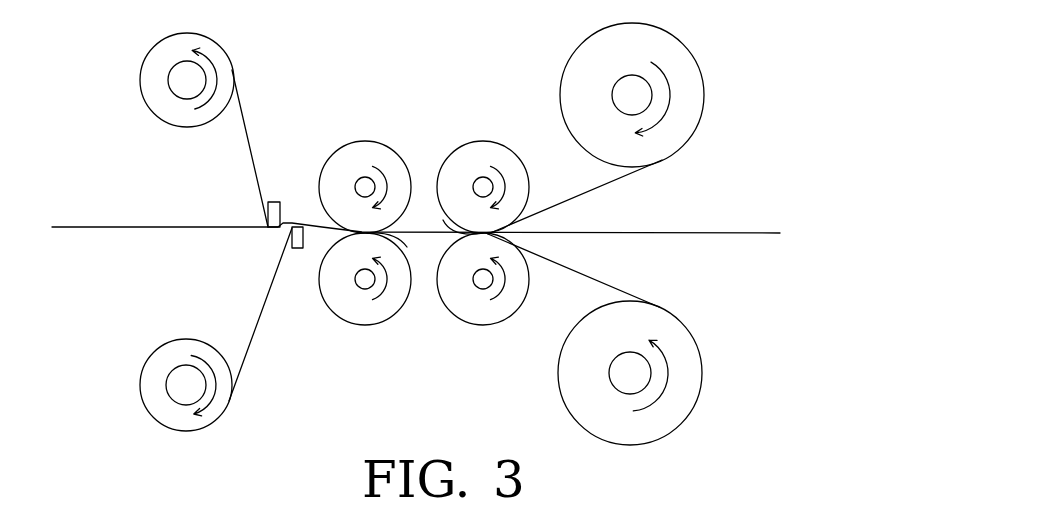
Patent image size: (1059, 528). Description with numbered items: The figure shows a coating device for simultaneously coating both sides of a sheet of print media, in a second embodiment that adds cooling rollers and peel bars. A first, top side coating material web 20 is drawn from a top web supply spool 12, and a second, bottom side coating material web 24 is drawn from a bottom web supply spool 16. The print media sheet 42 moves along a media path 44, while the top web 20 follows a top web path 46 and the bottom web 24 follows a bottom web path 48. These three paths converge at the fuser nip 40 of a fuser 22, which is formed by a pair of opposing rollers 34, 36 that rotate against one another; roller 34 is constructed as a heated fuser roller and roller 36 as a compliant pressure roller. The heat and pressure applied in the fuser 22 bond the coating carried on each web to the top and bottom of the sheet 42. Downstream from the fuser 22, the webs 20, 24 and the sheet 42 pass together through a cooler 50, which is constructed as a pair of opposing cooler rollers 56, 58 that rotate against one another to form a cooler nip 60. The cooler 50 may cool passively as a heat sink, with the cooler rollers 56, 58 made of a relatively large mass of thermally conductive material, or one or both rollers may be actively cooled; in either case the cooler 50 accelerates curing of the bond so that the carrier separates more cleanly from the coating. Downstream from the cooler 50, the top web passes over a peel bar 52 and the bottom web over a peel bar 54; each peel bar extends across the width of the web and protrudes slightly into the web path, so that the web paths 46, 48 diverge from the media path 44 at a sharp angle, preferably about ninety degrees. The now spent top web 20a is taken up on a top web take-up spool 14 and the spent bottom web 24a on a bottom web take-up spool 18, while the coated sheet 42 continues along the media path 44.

The top web supply spool 12 is at (703, 93).
The top web take-up spool 14 is at (142, 75).
The bottom web supply spool 16 is at (702, 370).
The bottom web take-up spool 18 is at (142, 387).
The top side coating material web 20 is at (600, 186).
The spent top web 20a is at (246, 125).
The fuser 22 is at (457, 140).
The bottom side coating material web 24 is at (600, 282).
The spent bottom web 24a is at (254, 335).
The heated fuser roller 34 is at (483, 150).
The compliant pressure roller 36 is at (483, 315).
The fuser nip 40 is at (455, 215).
The print media sheet 42 is at (742, 235).
The media path 44 is at (160, 205).
The top web path 46 is at (233, 132).
The bottom web path 48 is at (578, 206).
The cooler 50 is at (400, 344).
The peel bar 52 is at (272, 202).
The peel bar 54 is at (297, 248).
The cooler roller 56 is at (364, 150).
The cooler roller 58 is at (365, 315).
The cooler nip 60 is at (407, 247).